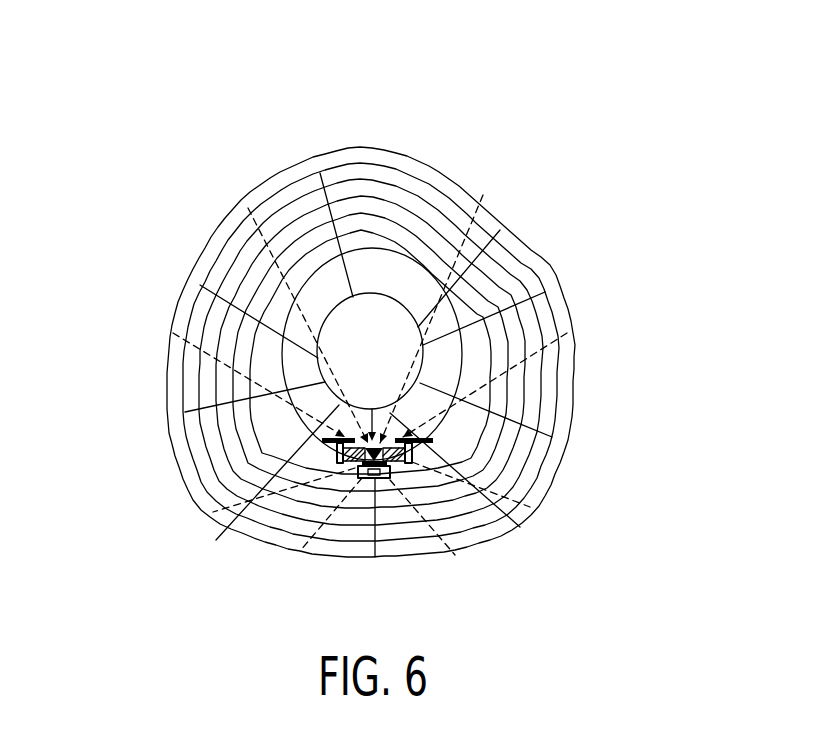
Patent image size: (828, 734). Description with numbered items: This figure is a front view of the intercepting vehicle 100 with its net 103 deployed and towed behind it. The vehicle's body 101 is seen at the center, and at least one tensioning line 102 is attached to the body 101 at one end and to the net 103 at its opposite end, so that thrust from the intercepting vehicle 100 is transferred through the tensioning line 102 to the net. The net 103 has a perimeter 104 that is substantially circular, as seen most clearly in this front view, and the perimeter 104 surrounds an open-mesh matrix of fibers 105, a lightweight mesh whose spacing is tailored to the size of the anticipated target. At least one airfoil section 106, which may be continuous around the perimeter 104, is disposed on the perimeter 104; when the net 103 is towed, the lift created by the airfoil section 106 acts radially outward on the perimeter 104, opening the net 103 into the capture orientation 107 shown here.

The intercepting vehicle 100 is at (333, 483).
The body 101 is at (377, 478).
The tensioning line 102 is at (203, 353).
The net 103 is at (574, 373).
The perimeter 104 is at (533, 247).
The open-mesh matrix of fibers 105 is at (288, 230).
The airfoil section 106 is at (472, 183).
The capture orientation 107 is at (196, 494).